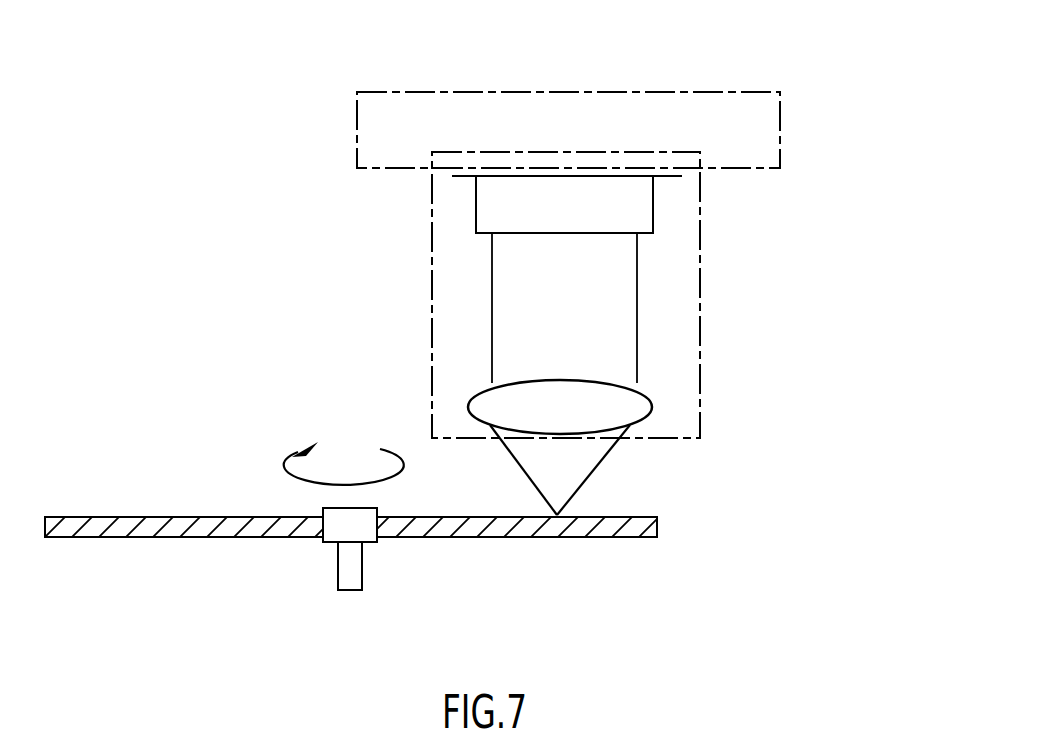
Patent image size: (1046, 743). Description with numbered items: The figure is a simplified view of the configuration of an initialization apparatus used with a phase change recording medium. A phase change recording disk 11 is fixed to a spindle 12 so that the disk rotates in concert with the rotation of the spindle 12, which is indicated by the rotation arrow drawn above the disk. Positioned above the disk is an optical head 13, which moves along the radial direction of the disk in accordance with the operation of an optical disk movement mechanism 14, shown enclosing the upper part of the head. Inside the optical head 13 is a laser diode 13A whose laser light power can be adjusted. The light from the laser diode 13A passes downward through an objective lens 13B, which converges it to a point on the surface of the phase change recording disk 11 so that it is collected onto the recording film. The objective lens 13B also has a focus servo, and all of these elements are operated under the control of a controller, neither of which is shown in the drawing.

The optical disk movement mechanism 14 is at (517, 92).
The optical head 13 is at (428, 324).
The laser diode 13A is at (653, 215).
The objective lens 13B is at (647, 393).
The spindle 12 is at (338, 563).
The phase change recording disk 11 is at (587, 537).